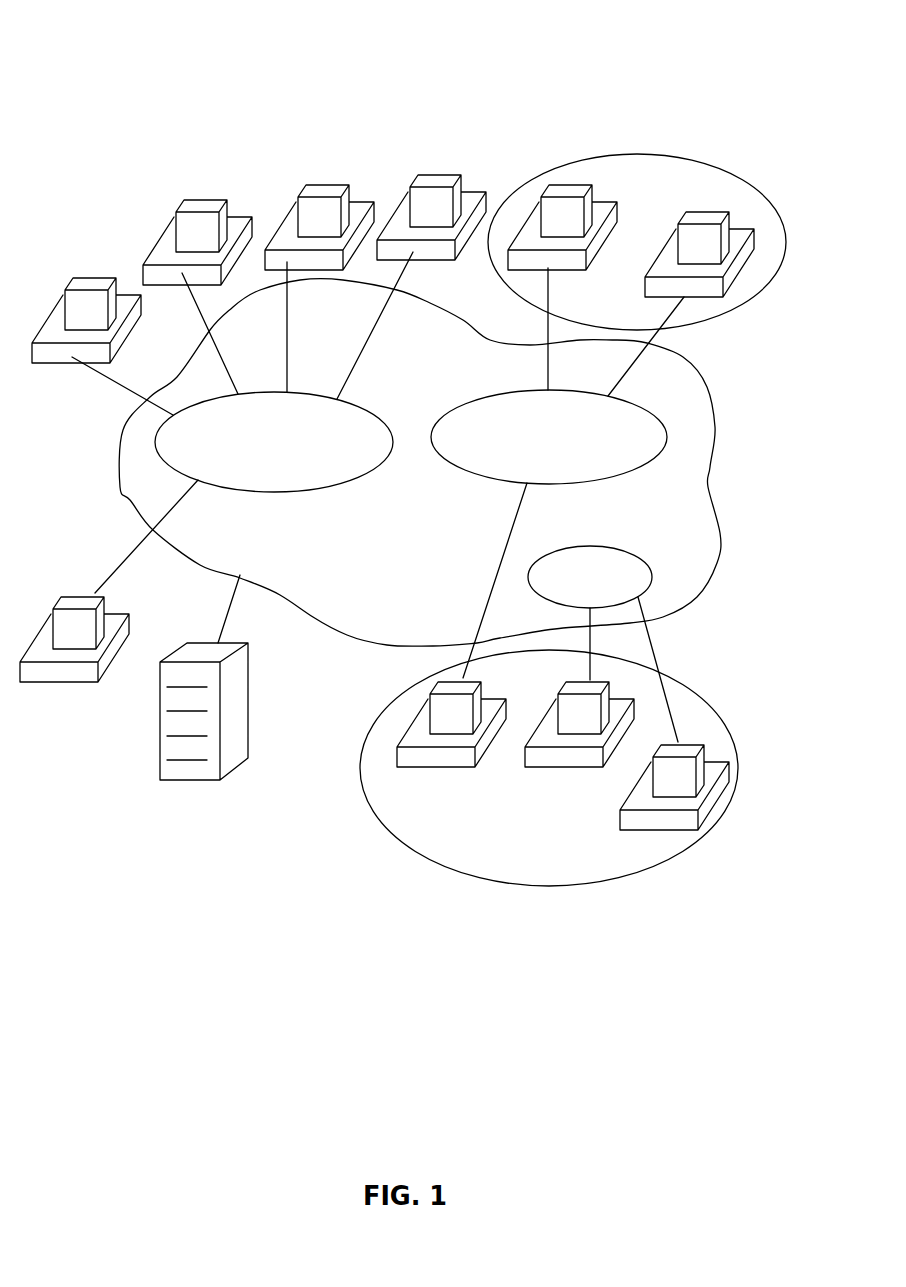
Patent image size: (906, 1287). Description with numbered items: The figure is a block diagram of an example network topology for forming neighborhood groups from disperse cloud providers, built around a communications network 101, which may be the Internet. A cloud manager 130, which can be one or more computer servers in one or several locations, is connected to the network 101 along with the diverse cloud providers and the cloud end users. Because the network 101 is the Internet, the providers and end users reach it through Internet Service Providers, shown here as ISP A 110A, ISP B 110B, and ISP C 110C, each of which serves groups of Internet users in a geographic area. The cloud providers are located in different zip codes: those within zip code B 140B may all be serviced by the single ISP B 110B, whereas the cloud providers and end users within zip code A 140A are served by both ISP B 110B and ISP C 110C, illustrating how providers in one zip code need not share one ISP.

The network 101 is at (713, 413).
The ISP A 110A is at (357, 406).
The ISP B 110B is at (648, 463).
The ISP C 110C is at (590, 546).
The cloud manager 130 is at (197, 781).
The zip code A 140A is at (696, 690).
The zip code B 140B is at (630, 153).